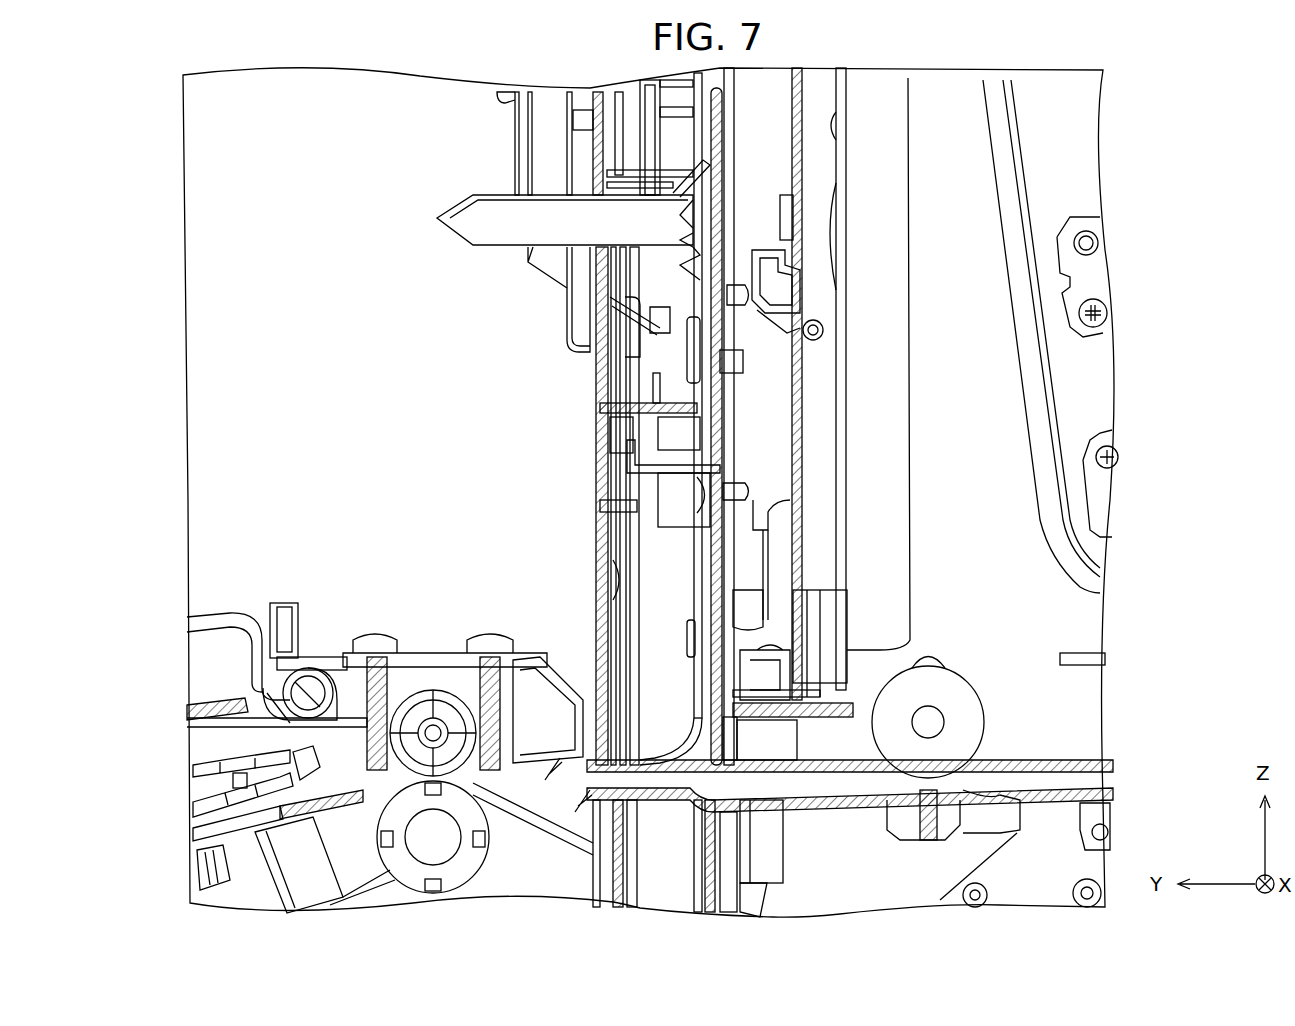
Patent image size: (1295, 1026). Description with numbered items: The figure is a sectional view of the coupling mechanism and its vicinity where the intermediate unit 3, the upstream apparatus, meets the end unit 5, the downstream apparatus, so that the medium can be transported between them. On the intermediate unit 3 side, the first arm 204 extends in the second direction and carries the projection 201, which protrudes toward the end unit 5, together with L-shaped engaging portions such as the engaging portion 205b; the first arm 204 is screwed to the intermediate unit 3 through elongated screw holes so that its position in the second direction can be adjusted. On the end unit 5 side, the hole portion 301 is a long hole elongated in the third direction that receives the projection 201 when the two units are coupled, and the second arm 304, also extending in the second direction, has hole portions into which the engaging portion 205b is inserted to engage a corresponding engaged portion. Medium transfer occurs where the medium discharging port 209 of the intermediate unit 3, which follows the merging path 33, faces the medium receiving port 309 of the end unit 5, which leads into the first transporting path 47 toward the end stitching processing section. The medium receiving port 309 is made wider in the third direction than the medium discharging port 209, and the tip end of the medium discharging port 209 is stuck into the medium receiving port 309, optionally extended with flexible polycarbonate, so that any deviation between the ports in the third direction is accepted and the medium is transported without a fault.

The end unit 5 is at (235, 97).
The intermediate unit 3 is at (1062, 118).
The engaging portion 205b is at (542, 115).
The projection 201 is at (627, 213).
The first arm 204 is at (680, 295).
The hole portion 301 is at (590, 300).
The second arm 304 is at (597, 382).
The medium receiving port 309 is at (607, 717).
The medium discharging port 209 is at (640, 787).
The merging path 33 is at (1097, 773).
The first transporting path 47 is at (333, 760).